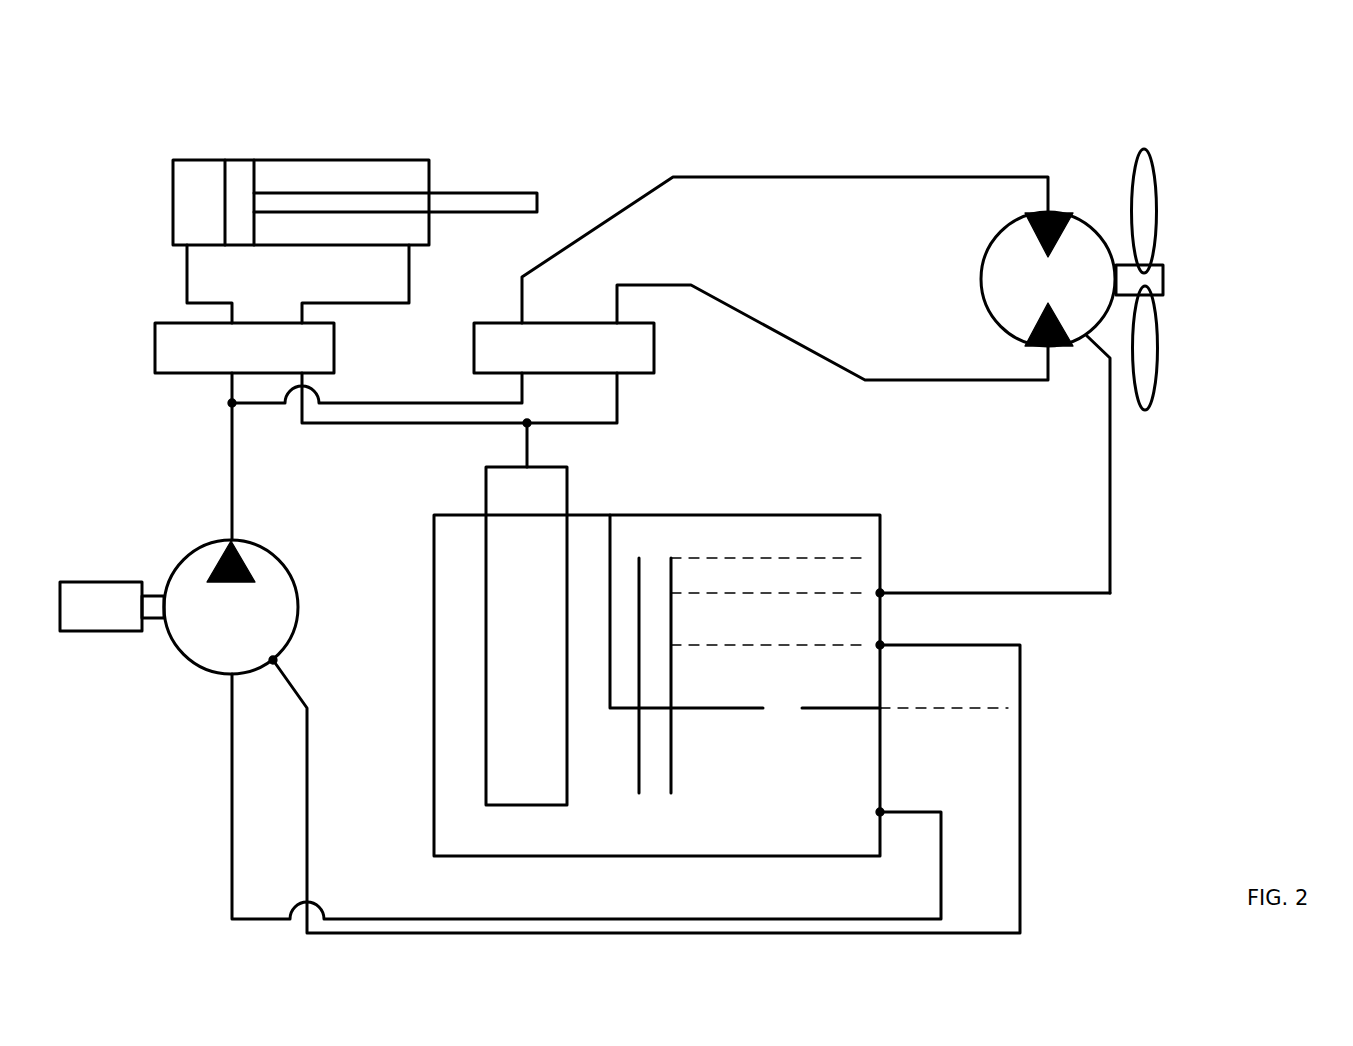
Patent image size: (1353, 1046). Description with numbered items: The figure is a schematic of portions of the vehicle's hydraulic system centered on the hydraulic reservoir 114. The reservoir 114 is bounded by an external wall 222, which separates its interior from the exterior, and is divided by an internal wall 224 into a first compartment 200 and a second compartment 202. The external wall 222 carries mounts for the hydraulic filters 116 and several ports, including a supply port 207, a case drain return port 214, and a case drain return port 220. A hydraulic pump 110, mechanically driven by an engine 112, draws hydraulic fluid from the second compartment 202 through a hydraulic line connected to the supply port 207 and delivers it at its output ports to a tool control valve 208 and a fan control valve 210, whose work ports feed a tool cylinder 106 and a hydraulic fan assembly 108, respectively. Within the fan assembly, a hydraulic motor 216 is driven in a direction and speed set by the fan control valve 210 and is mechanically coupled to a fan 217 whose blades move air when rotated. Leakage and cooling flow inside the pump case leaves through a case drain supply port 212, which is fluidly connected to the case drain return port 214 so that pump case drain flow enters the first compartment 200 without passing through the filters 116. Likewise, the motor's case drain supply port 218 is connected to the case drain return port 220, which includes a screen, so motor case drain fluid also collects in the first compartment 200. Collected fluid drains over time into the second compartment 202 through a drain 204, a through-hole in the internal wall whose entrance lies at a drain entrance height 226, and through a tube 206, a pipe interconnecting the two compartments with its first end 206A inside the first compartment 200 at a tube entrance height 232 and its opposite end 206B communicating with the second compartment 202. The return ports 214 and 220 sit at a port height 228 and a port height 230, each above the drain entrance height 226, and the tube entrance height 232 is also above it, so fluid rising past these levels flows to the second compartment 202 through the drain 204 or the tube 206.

The tool cylinder 106 is at (433, 140).
The hydraulic fan assembly 108 is at (1111, 257).
The hydraulic pump 110 is at (212, 620).
The engine 112 is at (82, 618).
The hydraulic reservoir 114 is at (673, 663).
The hydraulic filters 116 is at (507, 518).
The first compartment 200 is at (822, 678).
The second compartment 202 is at (592, 829).
The drain 204 is at (780, 706).
The tube 206 is at (697, 678).
The first end 206A is at (655, 560).
The second baffle plate 206B is at (653, 790).
The supply port 207 is at (880, 812).
The tool control valve 208 is at (226, 360).
The fan control valve 210 is at (545, 360).
The case drain supply port 212 is at (285, 658).
The case drain return port 214 is at (880, 645).
The hydraulic motor 216 is at (1029, 292).
The fan 217 is at (1145, 207).
The case drain supply port 218 is at (1086, 340).
The case drain return port 220 is at (880, 593).
The external wall 222 is at (775, 512).
The internal wall 224 is at (610, 602).
The drain entrance height 226 is at (987, 712).
The port height 228 is at (772, 645).
The port height 230 is at (772, 590).
The tube entrance height 232 is at (772, 557).